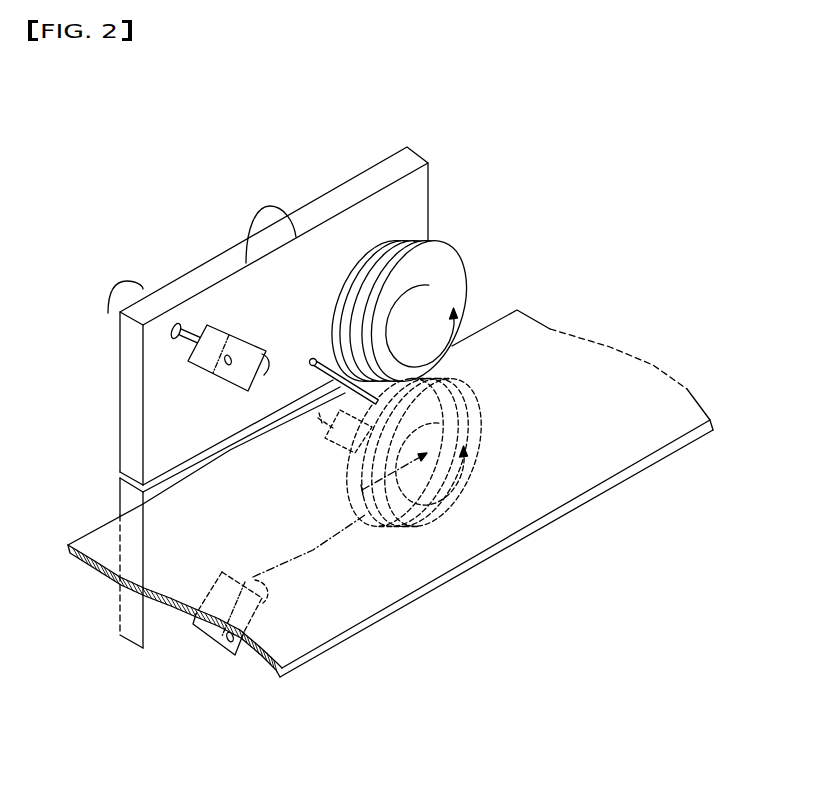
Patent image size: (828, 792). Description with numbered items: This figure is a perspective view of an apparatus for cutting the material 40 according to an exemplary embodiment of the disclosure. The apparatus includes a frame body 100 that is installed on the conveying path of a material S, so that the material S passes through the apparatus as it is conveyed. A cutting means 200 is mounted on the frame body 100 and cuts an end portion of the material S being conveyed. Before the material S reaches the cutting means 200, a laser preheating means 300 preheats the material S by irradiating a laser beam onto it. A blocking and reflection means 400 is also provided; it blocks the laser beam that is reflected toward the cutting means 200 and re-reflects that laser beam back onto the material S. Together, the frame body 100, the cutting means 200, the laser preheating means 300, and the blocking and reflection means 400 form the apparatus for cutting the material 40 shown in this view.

The apparatus for cutting the material 40 is at (400, 102).
The frame body 100 is at (192, 272).
The cutting means 200 is at (413, 239).
The laser preheating means 300 is at (232, 335).
The blocking and reflection means 400 is at (340, 377).
The material S is at (405, 604).